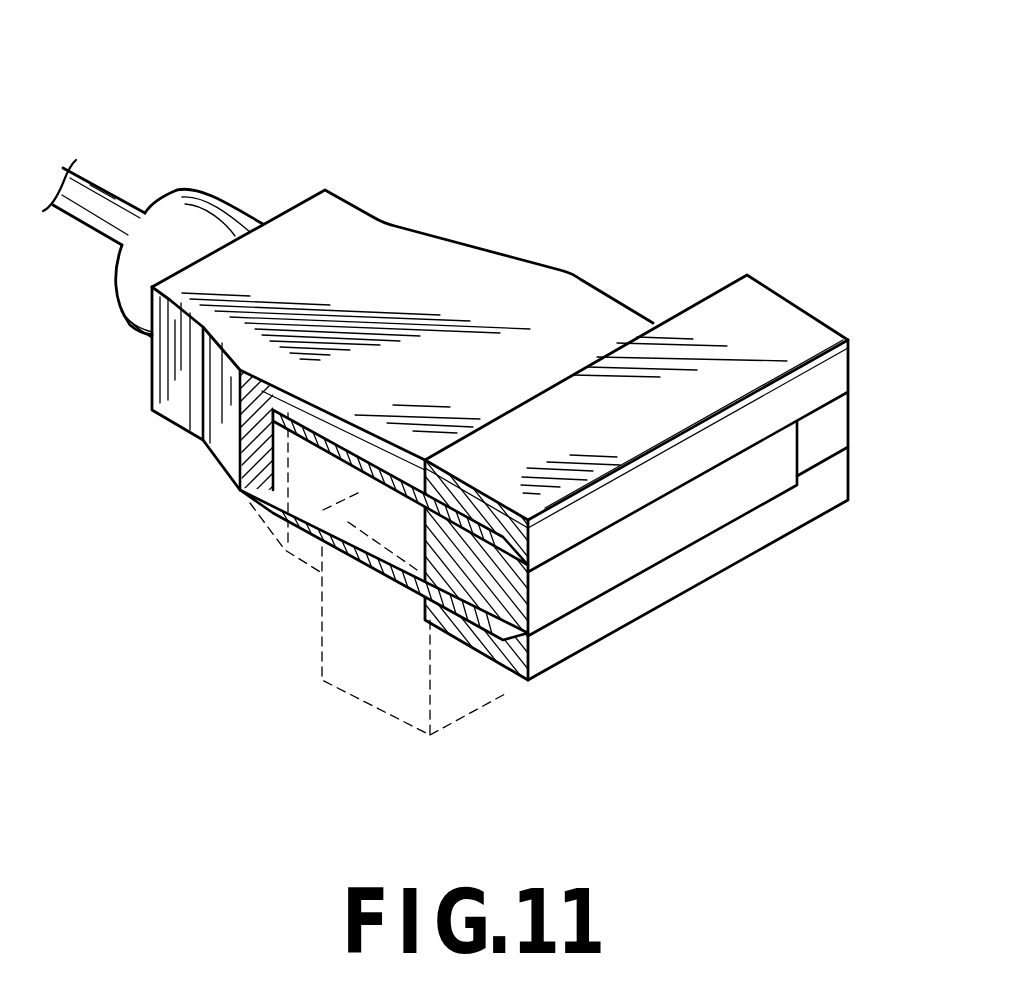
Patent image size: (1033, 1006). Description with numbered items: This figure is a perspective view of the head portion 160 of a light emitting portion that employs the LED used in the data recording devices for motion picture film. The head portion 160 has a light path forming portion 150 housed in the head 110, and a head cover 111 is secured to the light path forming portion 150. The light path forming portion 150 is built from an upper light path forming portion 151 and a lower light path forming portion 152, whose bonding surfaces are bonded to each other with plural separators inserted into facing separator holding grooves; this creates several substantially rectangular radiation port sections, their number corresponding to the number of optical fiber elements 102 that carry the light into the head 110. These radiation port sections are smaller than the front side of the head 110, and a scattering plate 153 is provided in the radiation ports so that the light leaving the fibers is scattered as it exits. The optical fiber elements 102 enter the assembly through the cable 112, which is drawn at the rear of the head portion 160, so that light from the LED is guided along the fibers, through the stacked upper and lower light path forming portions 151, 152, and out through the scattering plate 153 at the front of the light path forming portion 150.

The head portion 160 is at (589, 172).
The optical fiber cable 112 is at (102, 206).
The head cover 111 is at (474, 257).
The light path forming portion 150 is at (753, 236).
The upper light path forming portion 151 is at (794, 325).
The lower light path forming portion 152 is at (723, 555).
The scattering plate 153 is at (630, 563).
The optical fiber elements 102 is at (342, 468).
The head 110 is at (424, 612).